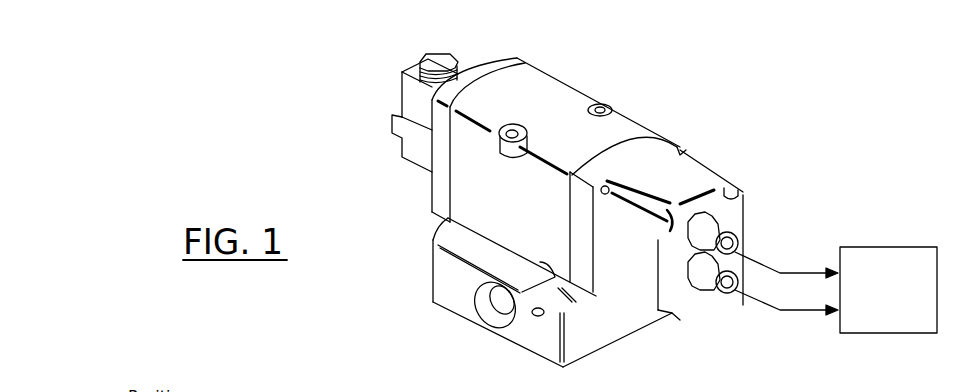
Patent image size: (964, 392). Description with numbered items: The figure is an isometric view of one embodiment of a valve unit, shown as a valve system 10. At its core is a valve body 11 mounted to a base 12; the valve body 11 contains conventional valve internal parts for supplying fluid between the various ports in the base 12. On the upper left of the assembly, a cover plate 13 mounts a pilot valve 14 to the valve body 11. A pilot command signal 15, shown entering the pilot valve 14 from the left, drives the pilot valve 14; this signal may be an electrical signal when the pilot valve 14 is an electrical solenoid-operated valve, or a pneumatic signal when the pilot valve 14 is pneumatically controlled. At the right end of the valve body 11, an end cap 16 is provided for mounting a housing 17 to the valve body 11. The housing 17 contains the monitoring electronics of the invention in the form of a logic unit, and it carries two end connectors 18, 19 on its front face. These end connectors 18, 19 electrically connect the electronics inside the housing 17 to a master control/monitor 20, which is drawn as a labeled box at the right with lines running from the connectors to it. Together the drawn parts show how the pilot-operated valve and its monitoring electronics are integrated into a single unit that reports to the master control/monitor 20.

The valve system 10 is at (763, 94).
The valve body 11 is at (545, 88).
The base 12 is at (463, 317).
The cover plate 13 is at (437, 155).
The pilot valve 14 is at (400, 108).
The pilot command signal 15 is at (398, 84).
The end cap 16 is at (657, 135).
The housing 17 is at (692, 168).
The end connector 18 is at (722, 228).
The end connector 19 is at (707, 285).
The master control/monitor 20 is at (862, 247).